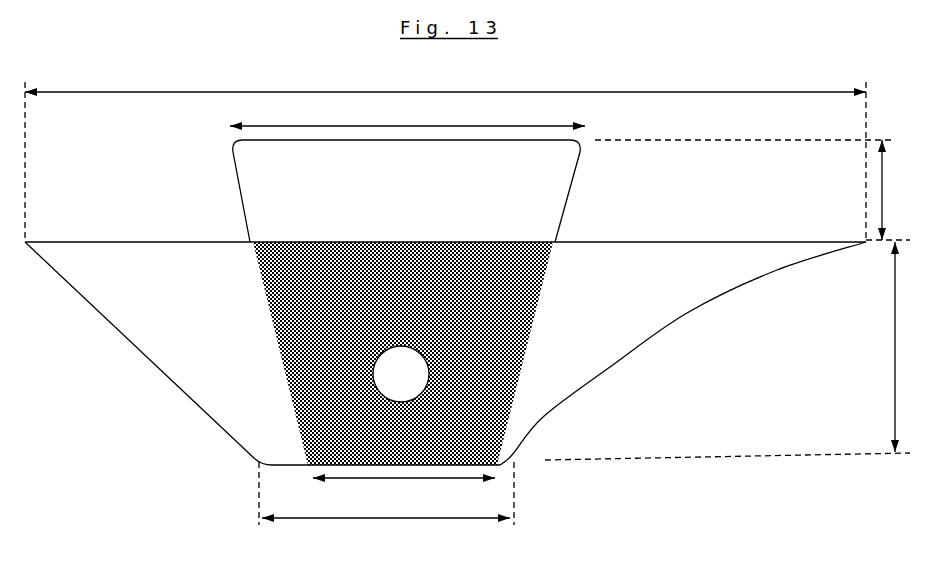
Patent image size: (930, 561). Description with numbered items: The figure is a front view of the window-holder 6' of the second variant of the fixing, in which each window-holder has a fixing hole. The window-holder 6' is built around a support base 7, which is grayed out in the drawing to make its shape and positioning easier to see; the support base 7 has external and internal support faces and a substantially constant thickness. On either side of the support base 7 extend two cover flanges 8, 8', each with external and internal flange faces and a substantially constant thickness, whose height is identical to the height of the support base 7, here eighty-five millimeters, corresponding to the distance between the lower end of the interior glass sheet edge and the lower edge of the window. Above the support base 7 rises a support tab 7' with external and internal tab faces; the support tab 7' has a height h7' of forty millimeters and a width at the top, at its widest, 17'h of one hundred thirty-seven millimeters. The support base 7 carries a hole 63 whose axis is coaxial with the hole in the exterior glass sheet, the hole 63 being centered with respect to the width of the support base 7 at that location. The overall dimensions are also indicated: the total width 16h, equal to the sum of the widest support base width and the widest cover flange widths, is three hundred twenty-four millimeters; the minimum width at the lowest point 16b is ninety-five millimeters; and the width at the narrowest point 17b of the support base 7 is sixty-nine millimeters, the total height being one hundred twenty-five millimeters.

The window-holder 6' is at (743, 121).
The support base 7 is at (440, 353).
The support tab 7' is at (387, 191).
The cover flange 8 is at (262, 321).
The cover flange 8' is at (683, 325).
The fixing hole 63 is at (375, 386).
The total width 16h is at (445, 153).
The width at the top of the support tab 17'h is at (407, 117).
The height of the support tab h7' is at (895, 190).
The width at the bottom of the support base 17b is at (404, 487).
The minimum width 16b is at (386, 501).